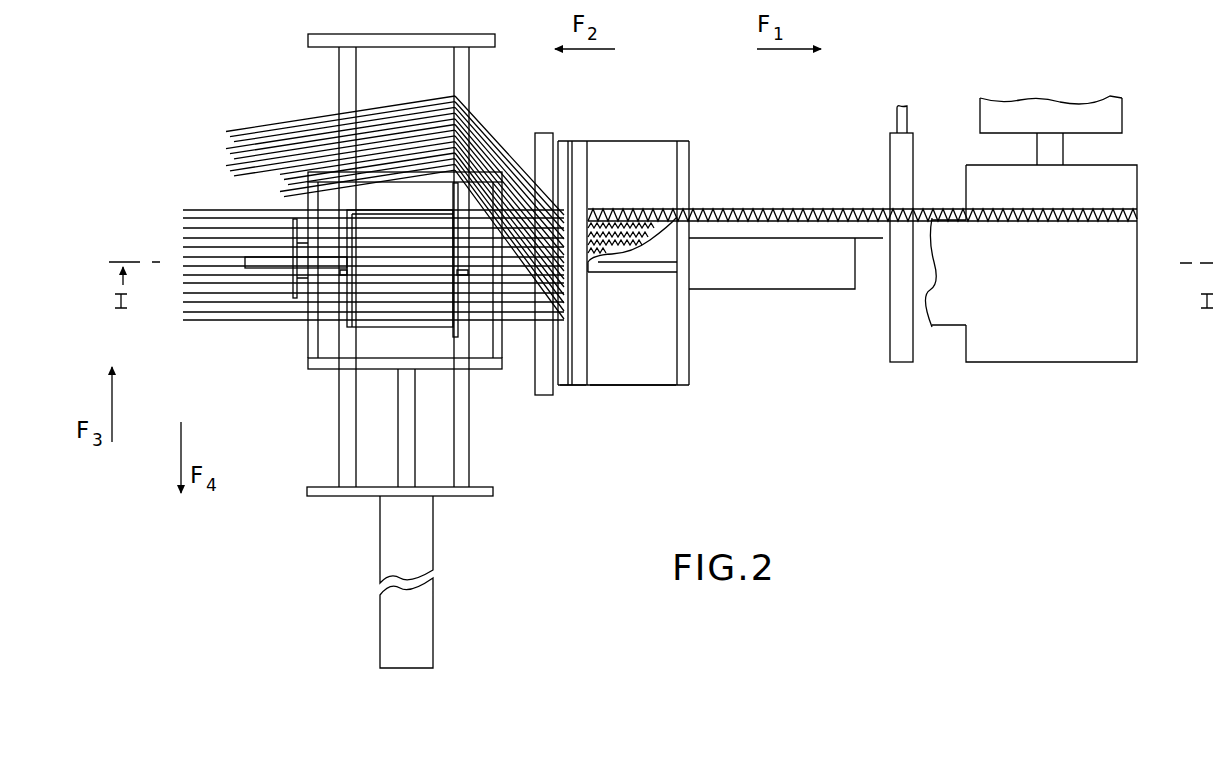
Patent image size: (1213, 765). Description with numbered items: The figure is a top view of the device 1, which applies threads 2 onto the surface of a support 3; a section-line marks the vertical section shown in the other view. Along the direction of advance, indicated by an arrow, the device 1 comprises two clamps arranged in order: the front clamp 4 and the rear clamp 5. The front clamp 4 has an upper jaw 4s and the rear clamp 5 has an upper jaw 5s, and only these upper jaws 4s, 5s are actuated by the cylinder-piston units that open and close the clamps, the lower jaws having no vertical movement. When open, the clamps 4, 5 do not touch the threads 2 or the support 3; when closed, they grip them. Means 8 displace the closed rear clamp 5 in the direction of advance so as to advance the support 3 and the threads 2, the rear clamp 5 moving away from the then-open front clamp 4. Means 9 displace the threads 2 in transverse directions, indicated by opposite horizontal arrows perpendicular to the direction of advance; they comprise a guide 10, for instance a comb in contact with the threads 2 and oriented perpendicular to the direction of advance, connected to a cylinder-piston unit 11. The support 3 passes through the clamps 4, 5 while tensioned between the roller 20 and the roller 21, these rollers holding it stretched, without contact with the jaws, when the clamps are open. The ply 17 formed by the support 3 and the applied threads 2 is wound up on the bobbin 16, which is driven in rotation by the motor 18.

The device 1 is at (729, 148).
The threads 2 is at (238, 321).
The support 3 is at (275, 321).
The front clamp 4 is at (579, 141).
The upper jaw of front clamp 4s is at (580, 387).
The rear clamp 5 is at (650, 141).
The upper jaw of rear clamp 5s is at (662, 387).
The means for displacing the rear clamp 8 is at (838, 291).
The means of transverse displacement 9 is at (338, 440).
The guide 10 is at (470, 78).
The cylinder-piston unit 11 is at (433, 545).
The bobbin 16 is at (1137, 190).
The ply 17 is at (748, 208).
The motor 18 is at (1110, 120).
The roller 20 is at (553, 395).
The roller 21 is at (890, 350).